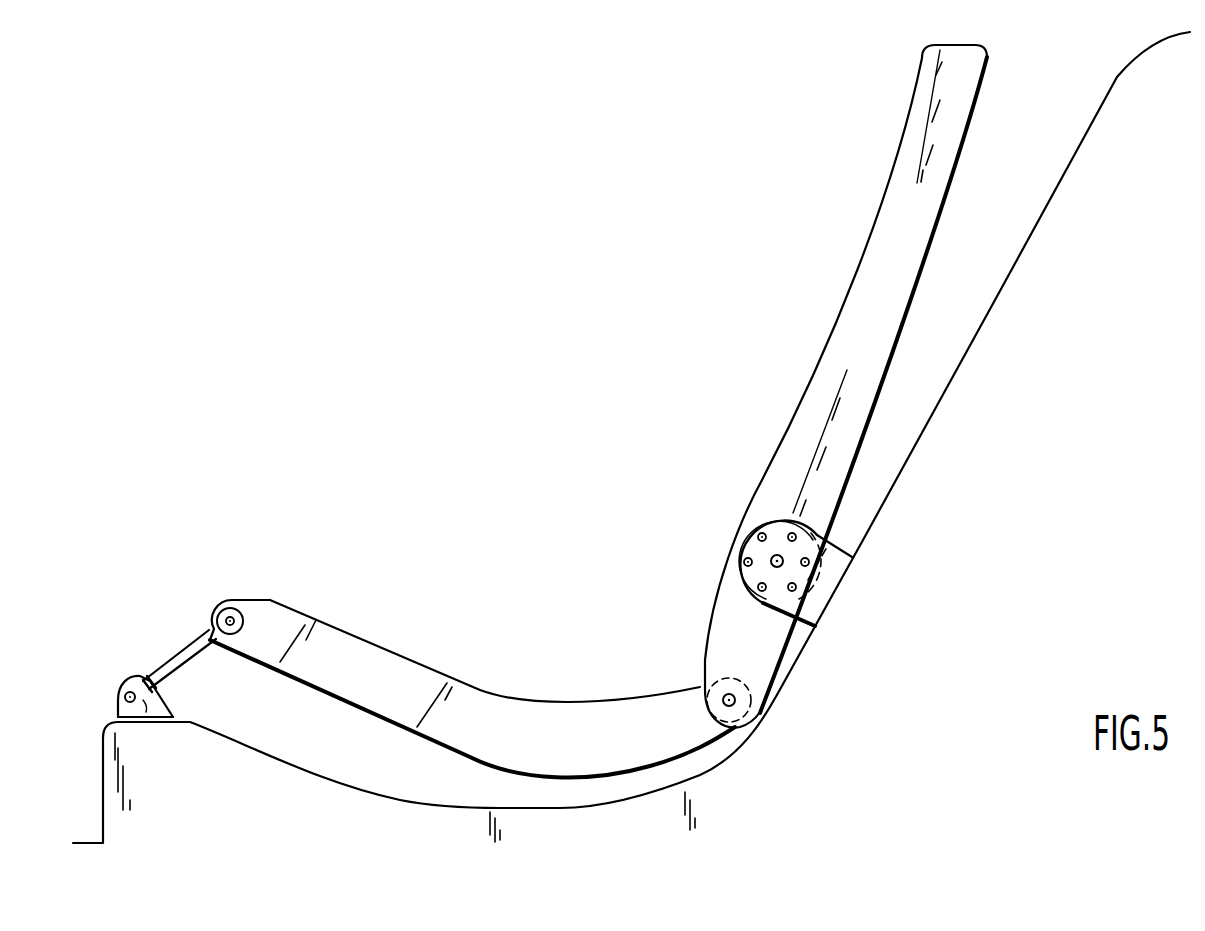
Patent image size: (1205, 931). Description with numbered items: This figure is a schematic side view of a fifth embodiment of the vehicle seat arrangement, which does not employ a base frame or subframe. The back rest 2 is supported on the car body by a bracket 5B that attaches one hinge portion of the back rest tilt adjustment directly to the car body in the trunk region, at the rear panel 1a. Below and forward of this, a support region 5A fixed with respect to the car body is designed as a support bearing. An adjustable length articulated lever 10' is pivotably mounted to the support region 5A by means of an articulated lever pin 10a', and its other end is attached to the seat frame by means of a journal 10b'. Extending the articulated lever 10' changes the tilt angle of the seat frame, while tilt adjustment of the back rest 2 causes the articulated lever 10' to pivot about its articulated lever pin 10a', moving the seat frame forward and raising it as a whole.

The rear panel 1a is at (984, 321).
The back rest 2 is at (852, 312).
The support region 5A is at (152, 713).
The bracket 5B is at (822, 596).
The adjustable length articulated lever 10' is at (168, 646).
The articulated lever pin 10a' is at (108, 700).
The journal 10b' is at (250, 587).